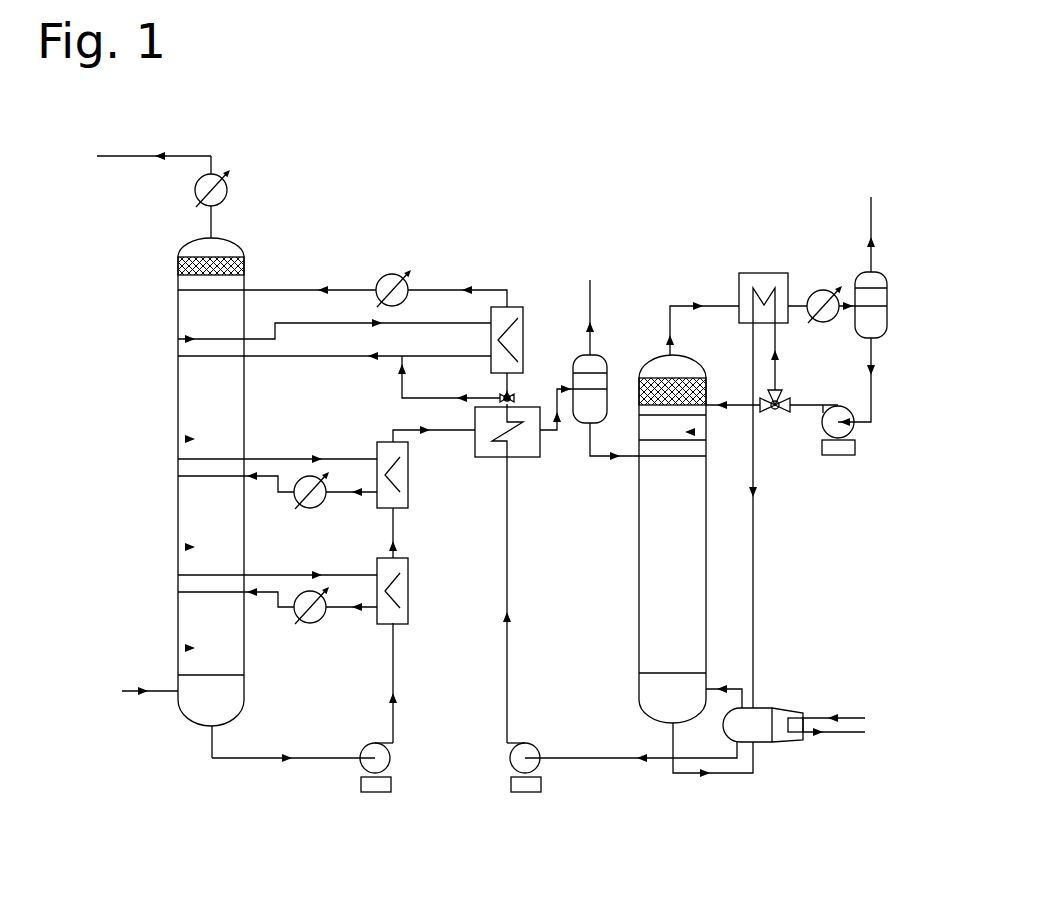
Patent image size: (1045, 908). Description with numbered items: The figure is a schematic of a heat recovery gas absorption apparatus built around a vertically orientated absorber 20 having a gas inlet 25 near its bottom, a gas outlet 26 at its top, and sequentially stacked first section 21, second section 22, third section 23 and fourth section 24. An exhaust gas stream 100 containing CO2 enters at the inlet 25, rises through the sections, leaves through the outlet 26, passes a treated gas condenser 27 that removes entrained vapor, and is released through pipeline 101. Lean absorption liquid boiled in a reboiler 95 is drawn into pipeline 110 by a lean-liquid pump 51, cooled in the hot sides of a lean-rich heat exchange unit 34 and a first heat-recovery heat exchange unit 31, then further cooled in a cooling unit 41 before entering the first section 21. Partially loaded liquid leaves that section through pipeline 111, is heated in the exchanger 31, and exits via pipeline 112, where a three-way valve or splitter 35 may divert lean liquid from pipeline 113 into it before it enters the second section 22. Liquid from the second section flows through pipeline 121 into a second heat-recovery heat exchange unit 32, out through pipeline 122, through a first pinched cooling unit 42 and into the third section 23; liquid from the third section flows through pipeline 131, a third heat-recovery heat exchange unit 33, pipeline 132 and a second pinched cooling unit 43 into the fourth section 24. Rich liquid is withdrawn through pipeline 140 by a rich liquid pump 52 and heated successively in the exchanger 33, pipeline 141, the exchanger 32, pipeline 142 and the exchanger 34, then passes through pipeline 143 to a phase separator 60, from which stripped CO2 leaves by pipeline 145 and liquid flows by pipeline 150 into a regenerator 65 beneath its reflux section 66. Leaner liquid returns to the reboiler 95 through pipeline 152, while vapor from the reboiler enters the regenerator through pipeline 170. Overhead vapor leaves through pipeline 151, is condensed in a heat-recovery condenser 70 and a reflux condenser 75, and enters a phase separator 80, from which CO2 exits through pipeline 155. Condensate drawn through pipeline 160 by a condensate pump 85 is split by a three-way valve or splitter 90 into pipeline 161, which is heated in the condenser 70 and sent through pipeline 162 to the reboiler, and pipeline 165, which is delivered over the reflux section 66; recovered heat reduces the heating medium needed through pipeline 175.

The absorber 20 is at (178, 390).
The first section 21 is at (180, 339).
The second section 22 is at (180, 439).
The third section 23 is at (180, 547).
The fourth section 24 is at (180, 648).
The gas inlet 25 is at (173, 693).
The gas outlet 26 is at (207, 237).
The treated gas condenser 27 is at (227, 200).
The first heat-recovery heat exchange unit 31 is at (525, 317).
The second heat-recovery heat exchange unit 32 is at (410, 488).
The third heat-recovery heat exchange unit 33 is at (410, 612).
The lean-rich heat exchange unit 34 is at (472, 443).
The three-way valve or splitter 35 is at (512, 398).
The cooling unit 41 is at (410, 278).
The first pinched cooling unit 42 is at (303, 509).
The second pinched cooling unit 43 is at (303, 624).
The lean-liquid pump 51 is at (508, 783).
The rich liquid pump 52 is at (360, 785).
The phase separator 60 is at (605, 360).
The regenerator 65 is at (637, 632).
The reflux section 66 is at (690, 432).
The heat-recovery condenser 70 is at (744, 273).
The reflux condenser 75 is at (825, 290).
The phase separator 80 is at (887, 285).
The condensate pump 85 is at (855, 452).
The three-way valve or splitter 90 is at (777, 412).
The reboiler 95 is at (785, 743).
The exhaust gas stream 100 is at (155, 695).
The pipeline 101 is at (183, 158).
The pipeline 110 is at (267, 288).
The pipeline 111 is at (365, 321).
The pipeline 112 is at (365, 357).
The pipeline 113 is at (407, 396).
The pipeline 121 is at (360, 455).
The pipeline 122 is at (333, 495).
The pipeline 131 is at (360, 572).
The pipeline 132 is at (333, 608).
The pipeline 140 is at (253, 762).
The pipeline 141 is at (397, 532).
The pipeline 142 is at (422, 428).
The pipeline 143 is at (553, 432).
The pipeline 145 is at (587, 303).
The pipeline 150 is at (600, 460).
The pipeline 151 is at (680, 303).
The pipeline 152 is at (682, 777).
The pipeline 155 is at (872, 257).
The pipeline 160 is at (875, 357).
The pipeline 161 is at (777, 373).
The pipeline 162 is at (753, 553).
The pipeline 165 is at (735, 403).
The pipeline 170 is at (728, 687).
The pipeline 175 is at (813, 712).